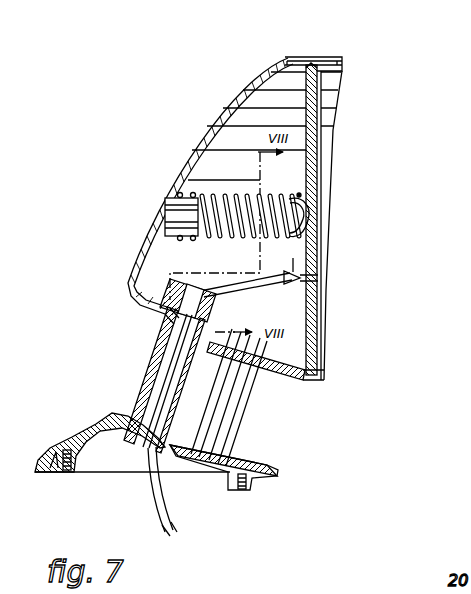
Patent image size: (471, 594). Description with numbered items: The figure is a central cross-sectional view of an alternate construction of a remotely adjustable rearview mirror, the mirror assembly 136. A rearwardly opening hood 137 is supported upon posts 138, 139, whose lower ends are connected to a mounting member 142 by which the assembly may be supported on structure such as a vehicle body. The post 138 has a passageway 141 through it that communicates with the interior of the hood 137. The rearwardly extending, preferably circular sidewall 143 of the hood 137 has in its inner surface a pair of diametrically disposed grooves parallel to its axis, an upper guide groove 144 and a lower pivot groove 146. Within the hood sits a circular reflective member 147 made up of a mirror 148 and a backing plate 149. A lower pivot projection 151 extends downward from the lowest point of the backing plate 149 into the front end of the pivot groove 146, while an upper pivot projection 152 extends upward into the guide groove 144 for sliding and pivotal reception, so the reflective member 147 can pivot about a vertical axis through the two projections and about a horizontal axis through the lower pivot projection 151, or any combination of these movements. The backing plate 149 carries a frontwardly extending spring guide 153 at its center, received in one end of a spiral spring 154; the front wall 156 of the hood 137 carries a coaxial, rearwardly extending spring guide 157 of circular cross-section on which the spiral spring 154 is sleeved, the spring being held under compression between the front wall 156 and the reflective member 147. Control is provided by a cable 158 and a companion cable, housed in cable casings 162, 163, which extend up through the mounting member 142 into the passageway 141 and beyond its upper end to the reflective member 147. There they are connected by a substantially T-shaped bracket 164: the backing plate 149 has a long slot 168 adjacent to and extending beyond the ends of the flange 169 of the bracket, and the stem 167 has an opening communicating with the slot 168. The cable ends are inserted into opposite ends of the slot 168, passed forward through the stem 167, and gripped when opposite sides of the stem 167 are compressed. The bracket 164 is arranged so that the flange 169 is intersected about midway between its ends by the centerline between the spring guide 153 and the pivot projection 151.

The mirror assembly 136 is at (118, 272).
The hood 137 is at (232, 88).
The post 138 is at (150, 357).
The post 139 is at (240, 408).
The passageway 141 is at (141, 400).
The mounting member 142 is at (264, 466).
The sidewall 143 is at (327, 64).
The guide groove 144 is at (342, 73).
The pivot groove 146 is at (320, 377).
The reflective member 147 is at (322, 163).
The mirror 148 is at (319, 121).
The backing plate 149 is at (307, 107).
The lower pivot projection 151 is at (307, 381).
The upper pivot projection 152 is at (311, 62).
The spring guide 153 is at (300, 212).
The spiral spring 154 is at (215, 195).
The front wall 156 is at (192, 148).
The spring guide 157 is at (178, 223).
The cable 158 is at (249, 288).
The cable casing 162 is at (175, 527).
The cable casing 163 is at (160, 507).
The T-shaped bracket 164 is at (319, 249).
The stem 167 is at (300, 273).
The slot 168 is at (296, 276).
The flange 169 is at (306, 291).